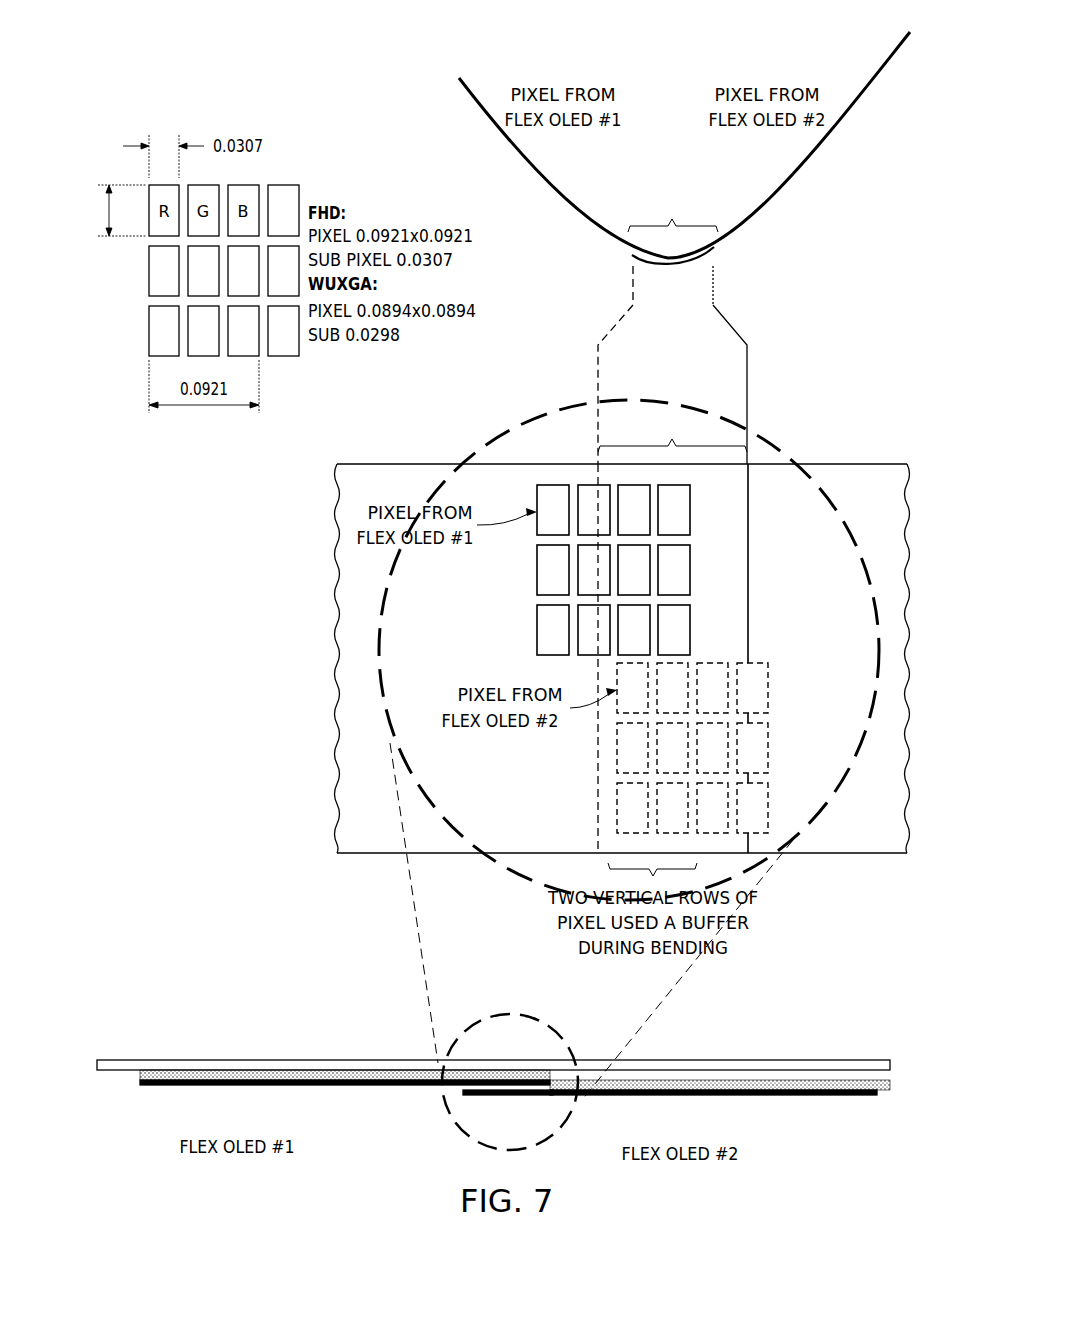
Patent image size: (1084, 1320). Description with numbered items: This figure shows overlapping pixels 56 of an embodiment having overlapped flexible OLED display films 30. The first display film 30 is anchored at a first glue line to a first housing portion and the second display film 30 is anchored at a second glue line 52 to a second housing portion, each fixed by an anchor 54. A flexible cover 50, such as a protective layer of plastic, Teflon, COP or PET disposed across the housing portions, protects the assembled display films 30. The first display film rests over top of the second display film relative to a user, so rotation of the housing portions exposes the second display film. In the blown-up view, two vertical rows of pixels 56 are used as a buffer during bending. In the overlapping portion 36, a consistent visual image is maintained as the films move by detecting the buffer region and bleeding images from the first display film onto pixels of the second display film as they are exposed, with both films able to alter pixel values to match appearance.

The flexible OLED display film 30 is at (532, 167).
The overlapping portion 36 is at (672, 323).
The flexible cover 50 is at (208, 1060).
The glue line 52 is at (752, 1037).
The anchor 54 is at (450, 1092).
The overlapping pixels 56 is at (528, 572).